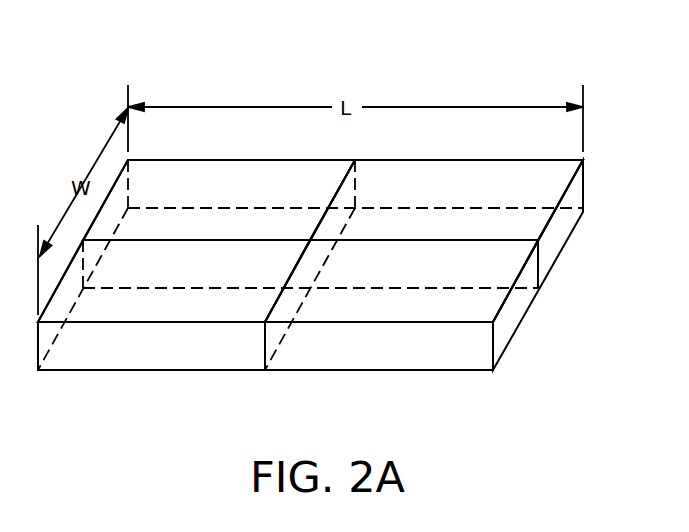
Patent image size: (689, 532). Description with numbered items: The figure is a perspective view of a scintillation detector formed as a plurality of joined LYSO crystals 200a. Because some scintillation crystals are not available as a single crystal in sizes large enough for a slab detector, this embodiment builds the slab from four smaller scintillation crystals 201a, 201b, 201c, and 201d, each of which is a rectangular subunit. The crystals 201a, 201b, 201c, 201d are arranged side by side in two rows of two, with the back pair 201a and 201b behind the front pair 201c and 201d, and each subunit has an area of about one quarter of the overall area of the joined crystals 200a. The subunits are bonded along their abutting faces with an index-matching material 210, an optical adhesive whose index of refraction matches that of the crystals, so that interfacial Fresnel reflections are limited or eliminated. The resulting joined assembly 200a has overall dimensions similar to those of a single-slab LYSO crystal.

The plurality of joined LYSO crystals 200a is at (326, 192).
The scintillation crystal 201a is at (214, 170).
The scintillation crystal 201b is at (454, 165).
The scintillation crystal 201c is at (168, 317).
The scintillation crystal 201d is at (403, 317).
The index-matching material 210 is at (344, 187).